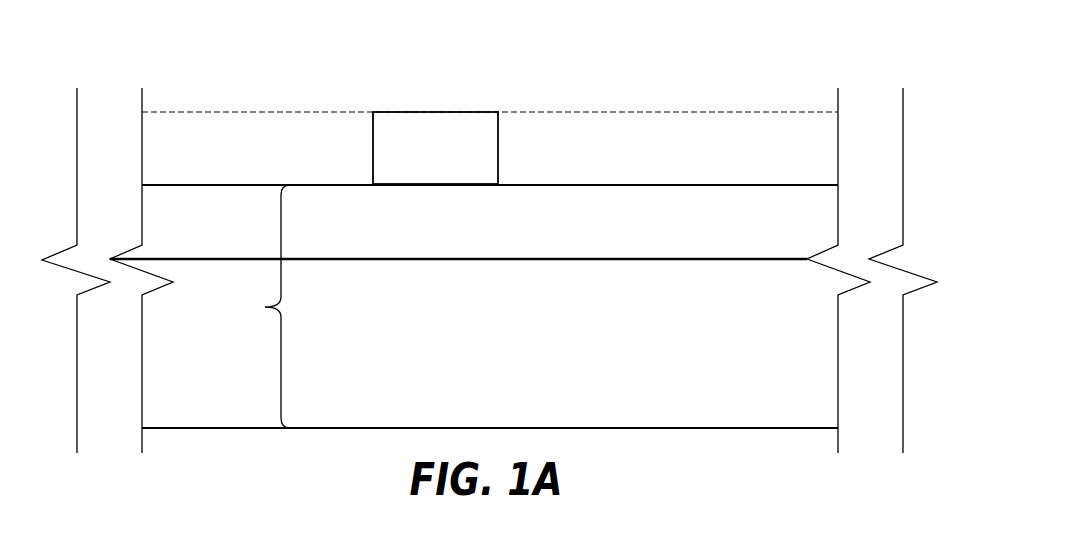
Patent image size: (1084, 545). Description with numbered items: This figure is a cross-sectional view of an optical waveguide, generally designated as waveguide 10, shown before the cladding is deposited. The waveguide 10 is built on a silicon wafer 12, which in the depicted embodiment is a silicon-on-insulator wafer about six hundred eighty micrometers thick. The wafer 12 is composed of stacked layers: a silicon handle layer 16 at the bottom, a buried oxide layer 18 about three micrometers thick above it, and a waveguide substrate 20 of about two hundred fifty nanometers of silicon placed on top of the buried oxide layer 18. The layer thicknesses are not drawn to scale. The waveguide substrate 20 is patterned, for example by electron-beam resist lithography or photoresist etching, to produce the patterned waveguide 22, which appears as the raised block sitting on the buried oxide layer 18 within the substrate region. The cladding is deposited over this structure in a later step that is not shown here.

The waveguide 10 is at (872, 67).
The silicon wafer 12 is at (490, 270).
The silicon handle layer 16 is at (451, 363).
The buried oxide (BOX) layer 18 is at (451, 235).
The waveguide substrate 20 is at (237, 164).
The patterned waveguide 22 is at (451, 163).